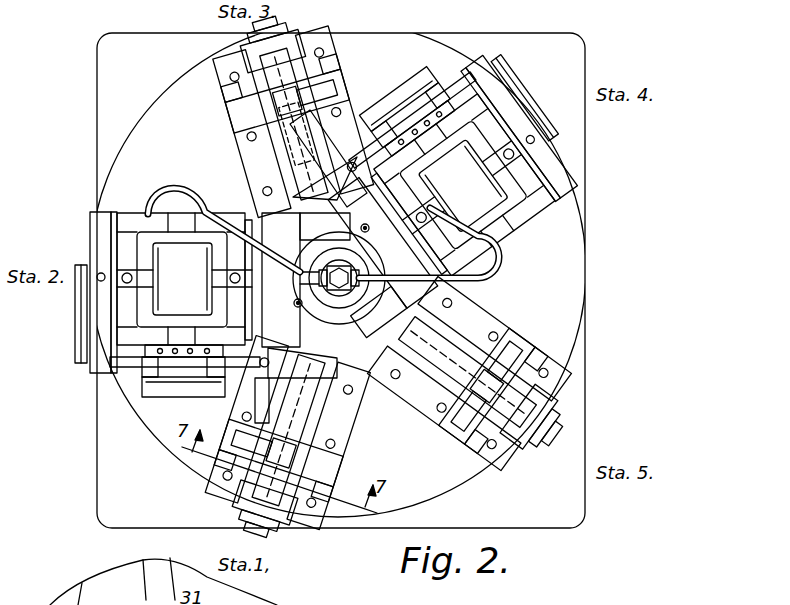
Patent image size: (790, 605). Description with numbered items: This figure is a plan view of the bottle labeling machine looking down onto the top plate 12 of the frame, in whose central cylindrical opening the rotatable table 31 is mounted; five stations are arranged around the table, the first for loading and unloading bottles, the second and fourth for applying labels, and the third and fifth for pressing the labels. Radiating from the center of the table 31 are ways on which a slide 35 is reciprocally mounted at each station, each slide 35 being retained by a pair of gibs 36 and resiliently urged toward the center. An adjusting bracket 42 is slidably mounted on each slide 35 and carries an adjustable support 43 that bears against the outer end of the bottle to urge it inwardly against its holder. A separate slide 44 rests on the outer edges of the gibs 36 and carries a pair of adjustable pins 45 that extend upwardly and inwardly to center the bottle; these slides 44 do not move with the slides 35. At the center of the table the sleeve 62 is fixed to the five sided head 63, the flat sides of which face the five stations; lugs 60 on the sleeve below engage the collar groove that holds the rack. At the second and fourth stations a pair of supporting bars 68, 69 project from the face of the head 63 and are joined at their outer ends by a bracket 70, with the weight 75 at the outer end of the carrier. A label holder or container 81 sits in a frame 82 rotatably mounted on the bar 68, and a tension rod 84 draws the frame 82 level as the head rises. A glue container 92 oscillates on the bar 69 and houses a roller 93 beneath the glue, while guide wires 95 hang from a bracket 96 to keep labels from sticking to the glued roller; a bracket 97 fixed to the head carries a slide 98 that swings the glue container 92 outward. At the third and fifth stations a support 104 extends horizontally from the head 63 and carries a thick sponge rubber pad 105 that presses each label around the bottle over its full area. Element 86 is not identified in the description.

The top plate 12 is at (341, 280).
The table 31 is at (338, 269).
The slide 35 is at (293, 31).
The gibs 36 is at (322, 43).
The adjusting bracket 42 is at (518, 437).
The adjustable support 43 is at (532, 417).
The slide 44 is at (222, 113).
The adjustable pins 45 is at (497, 350).
The lugs 60 is at (258, 590).
The sleeve 62 is at (338, 310).
The five sided head 63 is at (339, 294).
The supporting bar 68 is at (257, 213).
The supporting bar 69 is at (127, 366).
The bracket 70 is at (92, 244).
The weight 75 is at (76, 326).
The label holder or container 81 is at (210, 300).
The frame 82 is at (133, 213).
The tension rod 84 is at (297, 303).
The hose 86 is at (200, 188).
The glue container 92 is at (167, 397).
The roller 93 is at (147, 383).
The guide wires 95 is at (182, 360).
The bracket 96 is at (150, 350).
The bracket 97 is at (263, 400).
The slide 98 is at (297, 133).
The support 104 is at (278, 85).
The sponge rubber pad 105 is at (277, 160).